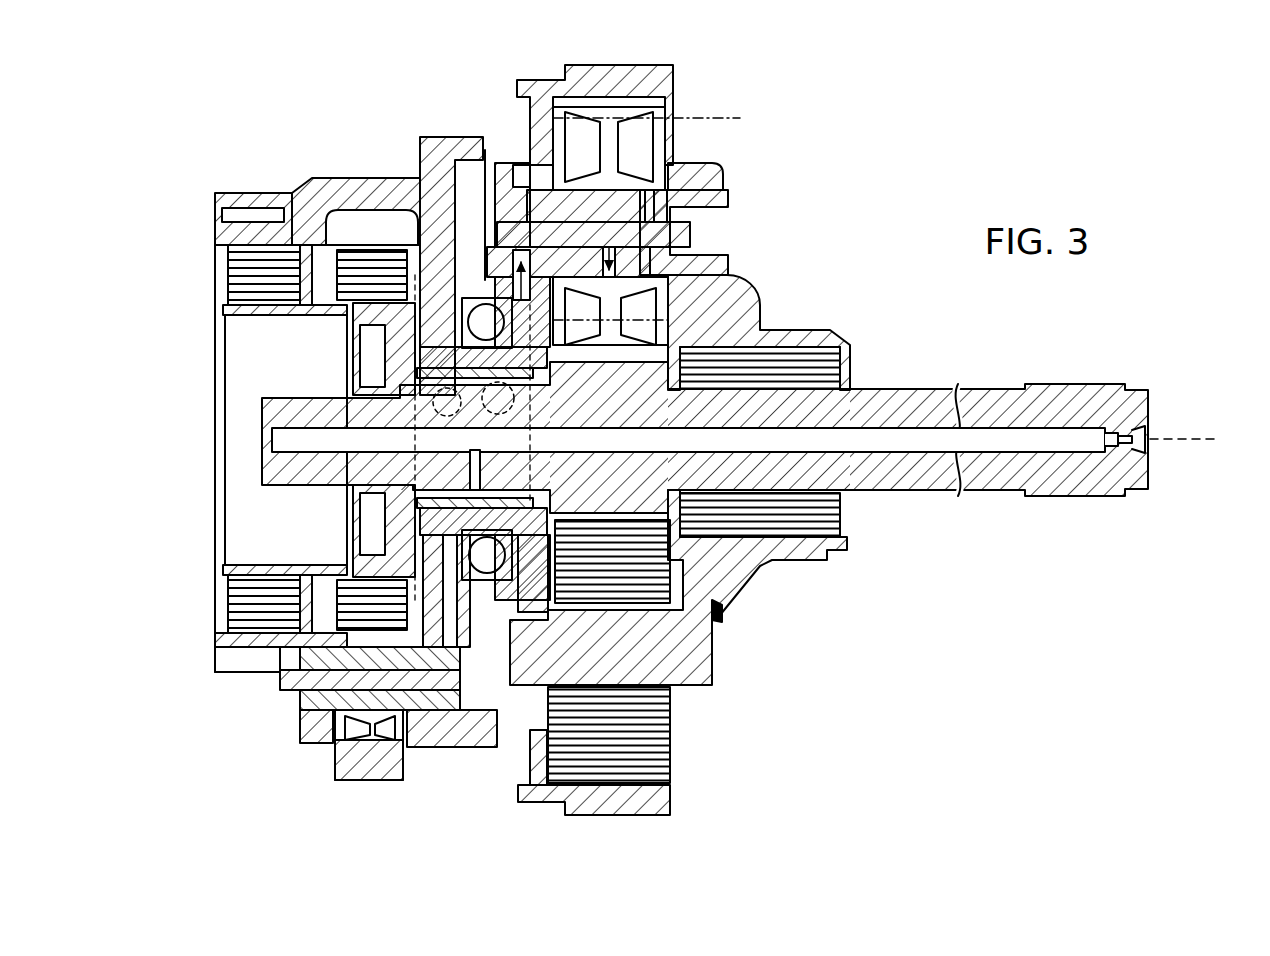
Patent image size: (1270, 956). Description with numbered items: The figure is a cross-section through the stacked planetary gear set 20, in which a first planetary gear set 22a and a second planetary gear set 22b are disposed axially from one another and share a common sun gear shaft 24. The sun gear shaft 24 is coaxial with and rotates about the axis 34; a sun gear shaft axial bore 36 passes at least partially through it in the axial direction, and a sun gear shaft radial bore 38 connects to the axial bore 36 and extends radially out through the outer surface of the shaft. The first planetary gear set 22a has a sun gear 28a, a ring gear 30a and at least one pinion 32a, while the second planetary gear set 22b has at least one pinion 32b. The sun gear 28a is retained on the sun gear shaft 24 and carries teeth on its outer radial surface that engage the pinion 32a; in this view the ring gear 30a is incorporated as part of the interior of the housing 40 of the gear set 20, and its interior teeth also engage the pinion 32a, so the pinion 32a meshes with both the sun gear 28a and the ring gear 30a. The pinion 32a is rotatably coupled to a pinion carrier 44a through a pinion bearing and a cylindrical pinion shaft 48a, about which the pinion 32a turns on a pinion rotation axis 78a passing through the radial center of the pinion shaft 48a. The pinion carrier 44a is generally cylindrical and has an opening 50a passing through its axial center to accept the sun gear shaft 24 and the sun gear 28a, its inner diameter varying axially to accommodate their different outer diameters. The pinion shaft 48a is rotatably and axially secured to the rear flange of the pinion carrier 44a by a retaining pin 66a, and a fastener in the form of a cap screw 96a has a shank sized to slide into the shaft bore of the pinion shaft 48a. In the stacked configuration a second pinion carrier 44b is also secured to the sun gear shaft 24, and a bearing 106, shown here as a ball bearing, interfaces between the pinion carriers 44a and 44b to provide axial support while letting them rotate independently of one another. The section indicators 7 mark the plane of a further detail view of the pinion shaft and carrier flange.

The stacked planetary gear set 20 is at (1088, 734).
The first planetary gear set 22a is at (742, 613).
The second planetary gear set 22b is at (348, 170).
The sun gear shaft 24 is at (912, 405).
The sun gear 28a is at (715, 622).
The ring gear 30a is at (673, 733).
The pinion 32a is at (653, 122).
The pinion 32b is at (357, 767).
The axis 34 is at (1185, 445).
The sun gear shaft axial bore 36 is at (1002, 445).
The sun gear shaft radial bore 38 is at (478, 460).
The housing 40 is at (637, 78).
The pinion carrier 44a is at (768, 315).
The pinion carrier 44b is at (467, 748).
The pinion shaft 48a is at (545, 208).
The opening 50a is at (847, 527).
The retaining pin 66a is at (498, 165).
The pinion rotation axis 78a is at (697, 235).
The cap screw 96a is at (650, 213).
The bearing 106 is at (490, 560).
The section line 7 is at (600, 117).